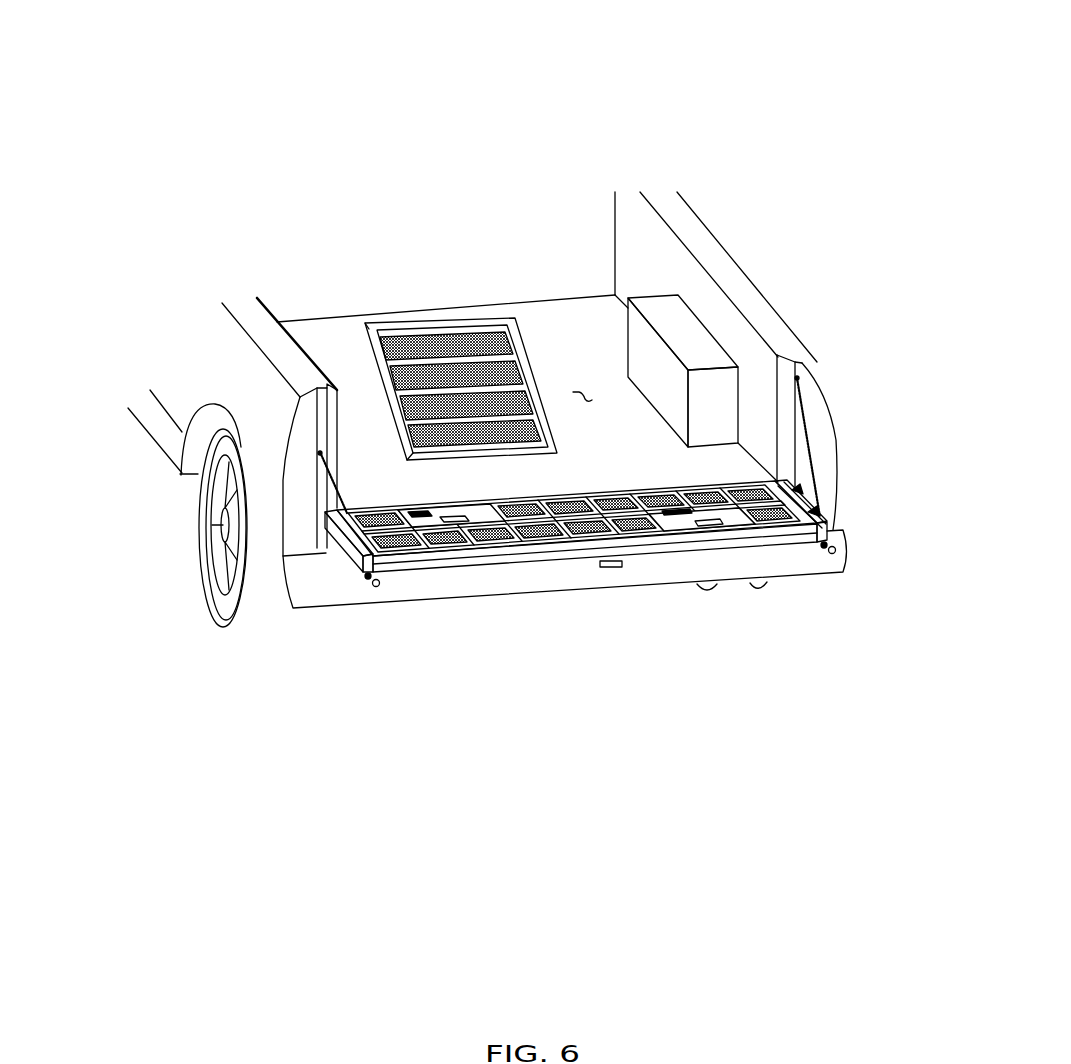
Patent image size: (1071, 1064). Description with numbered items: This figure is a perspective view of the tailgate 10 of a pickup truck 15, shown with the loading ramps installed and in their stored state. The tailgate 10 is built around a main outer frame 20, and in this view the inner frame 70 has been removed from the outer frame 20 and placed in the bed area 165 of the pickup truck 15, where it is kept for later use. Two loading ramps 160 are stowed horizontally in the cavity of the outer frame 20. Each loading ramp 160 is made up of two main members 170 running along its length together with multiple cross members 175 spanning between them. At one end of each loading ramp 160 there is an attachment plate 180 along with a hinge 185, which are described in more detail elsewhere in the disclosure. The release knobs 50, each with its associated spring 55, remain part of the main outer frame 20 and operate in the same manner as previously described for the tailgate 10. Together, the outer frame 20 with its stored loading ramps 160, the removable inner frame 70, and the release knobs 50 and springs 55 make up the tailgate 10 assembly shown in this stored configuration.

The tailgate 10 is at (292, 207).
The pickup truck 15 is at (653, 204).
The outer frame 20 is at (410, 577).
The release knobs 50 is at (374, 586).
The spring 55 is at (365, 571).
The inner frame 70 is at (447, 375).
The loading ramp 160 is at (792, 490).
The bed area 165 is at (587, 400).
The main members 170 is at (497, 515).
The cross members 175 is at (630, 502).
The attachment plate 180 is at (445, 520).
The hinge 185 is at (320, 452).